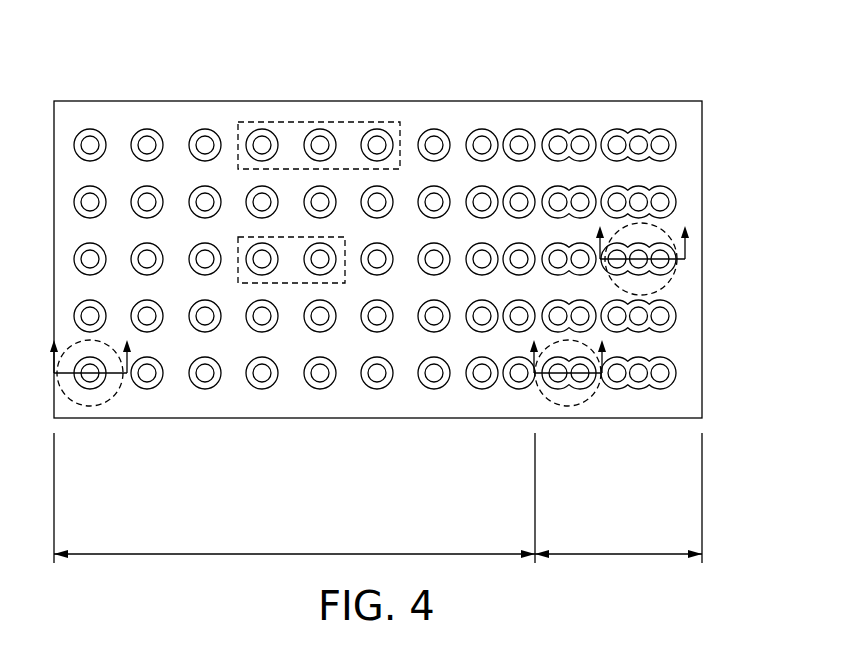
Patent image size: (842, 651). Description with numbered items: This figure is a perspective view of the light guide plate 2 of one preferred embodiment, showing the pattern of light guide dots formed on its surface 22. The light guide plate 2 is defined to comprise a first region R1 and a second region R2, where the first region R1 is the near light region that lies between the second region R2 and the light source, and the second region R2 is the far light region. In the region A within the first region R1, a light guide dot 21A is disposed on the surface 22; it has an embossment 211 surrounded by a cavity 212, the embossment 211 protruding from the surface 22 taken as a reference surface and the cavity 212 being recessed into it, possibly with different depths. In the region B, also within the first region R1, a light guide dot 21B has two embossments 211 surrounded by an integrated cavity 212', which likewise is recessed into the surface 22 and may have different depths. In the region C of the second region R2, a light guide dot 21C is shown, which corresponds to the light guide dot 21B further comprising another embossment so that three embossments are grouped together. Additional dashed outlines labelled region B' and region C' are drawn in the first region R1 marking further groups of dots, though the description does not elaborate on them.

The light guide plate 2 is at (705, 72).
The surface 22 is at (685, 127).
The embossment 211 is at (89, 136).
The cavity 212 is at (111, 110).
The integrated cavity 212' is at (525, 414).
The light guide dot 21A is at (102, 390).
The light guide dot 21B is at (612, 414).
The light guide dot 21C is at (665, 273).
The region A is at (95, 407).
The region B is at (569, 401).
The region C is at (661, 241).
The region B' is at (291, 354).
The region C' is at (319, 103).
The first region R1 is at (294, 498).
The second region R2 is at (618, 498).